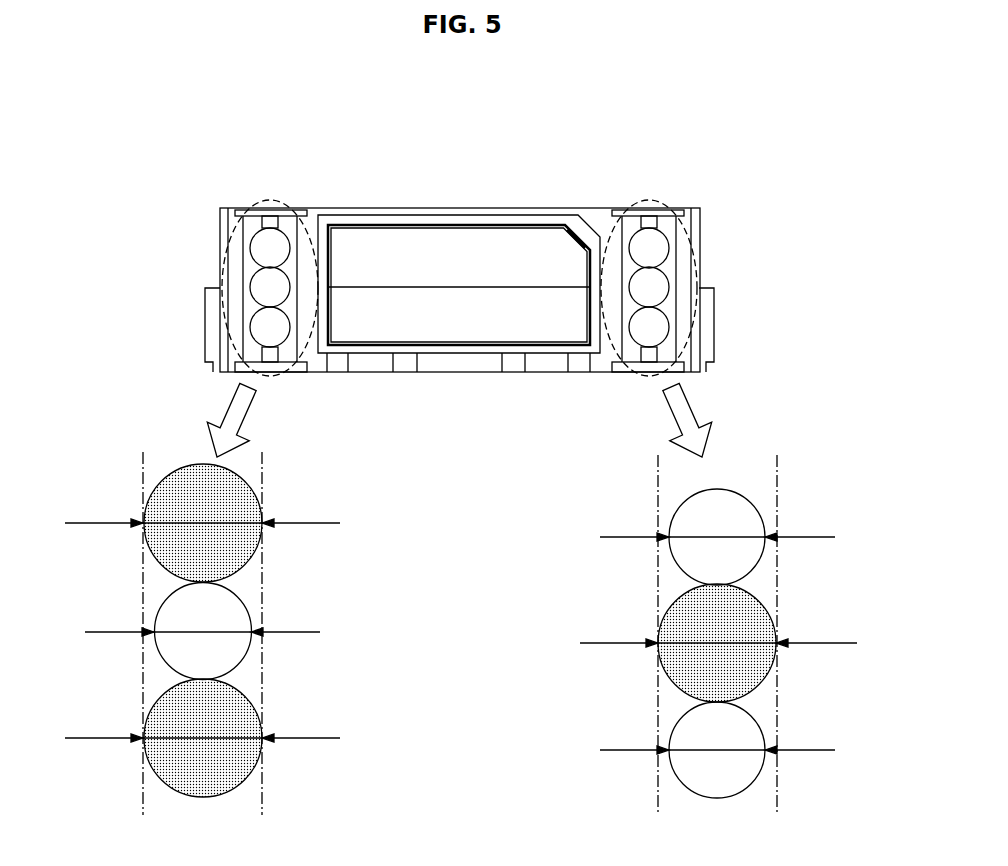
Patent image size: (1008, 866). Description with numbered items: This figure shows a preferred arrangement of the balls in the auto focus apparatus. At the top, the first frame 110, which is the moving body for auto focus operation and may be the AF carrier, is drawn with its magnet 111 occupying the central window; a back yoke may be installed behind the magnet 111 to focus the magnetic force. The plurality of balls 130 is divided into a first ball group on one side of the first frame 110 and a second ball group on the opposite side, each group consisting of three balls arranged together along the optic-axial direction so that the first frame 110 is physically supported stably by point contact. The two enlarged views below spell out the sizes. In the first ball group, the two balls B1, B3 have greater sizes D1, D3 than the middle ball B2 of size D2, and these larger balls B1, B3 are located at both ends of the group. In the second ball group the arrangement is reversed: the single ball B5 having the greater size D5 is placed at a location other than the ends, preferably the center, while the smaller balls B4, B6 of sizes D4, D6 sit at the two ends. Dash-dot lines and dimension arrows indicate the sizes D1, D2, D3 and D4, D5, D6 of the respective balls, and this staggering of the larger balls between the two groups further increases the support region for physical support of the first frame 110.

The first frame 110 is at (408, 201).
The magnet 111 is at (452, 323).
The plurality of balls 130 is at (267, 293).
The ball B1 is at (157, 508).
The ball B2 is at (170, 618).
The ball B3 is at (157, 720).
The ball B4 is at (747, 513).
The ball B5 is at (750, 617).
The ball B6 is at (747, 727).
The size of ball B1 D1 is at (202, 512).
The size of ball B2 D2 is at (202, 622).
The size of ball B3 D3 is at (202, 727).
The size of ball B4 D4 is at (717, 524).
The size of ball B5 D5 is at (718, 632).
The size of ball B6 D6 is at (717, 739).